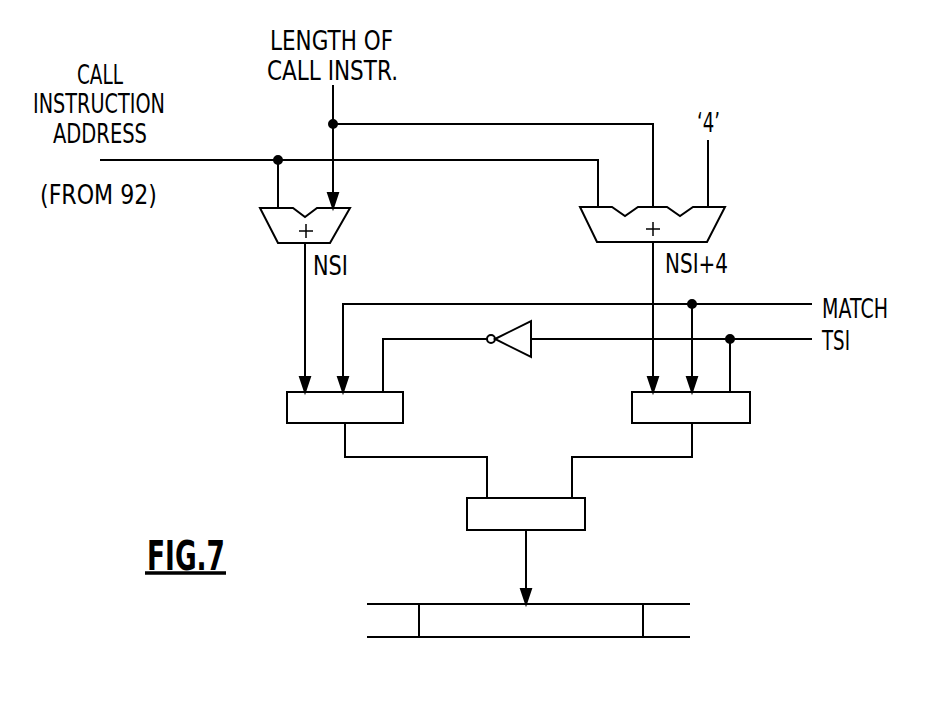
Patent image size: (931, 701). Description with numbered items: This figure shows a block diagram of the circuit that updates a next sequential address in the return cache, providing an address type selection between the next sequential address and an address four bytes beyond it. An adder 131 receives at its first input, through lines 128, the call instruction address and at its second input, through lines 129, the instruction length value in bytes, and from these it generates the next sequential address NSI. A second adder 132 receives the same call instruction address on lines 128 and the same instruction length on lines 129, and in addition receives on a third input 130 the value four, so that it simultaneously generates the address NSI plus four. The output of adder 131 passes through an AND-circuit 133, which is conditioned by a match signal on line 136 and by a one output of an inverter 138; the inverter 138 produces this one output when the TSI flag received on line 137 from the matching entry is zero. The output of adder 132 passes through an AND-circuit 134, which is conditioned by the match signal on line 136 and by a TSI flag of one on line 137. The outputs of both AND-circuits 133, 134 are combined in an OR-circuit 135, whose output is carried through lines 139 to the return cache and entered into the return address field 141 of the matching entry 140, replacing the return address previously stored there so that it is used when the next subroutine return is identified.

The lines 128 is at (228, 160).
The lines 129 is at (332, 113).
The third input 130 is at (708, 182).
The adder 131 is at (350, 220).
The adder 132 is at (716, 222).
The AND-circuit 133 is at (287, 400).
The AND-circuit 134 is at (733, 423).
The OR-circuit 135 is at (467, 512).
The line 136 is at (762, 303).
The line 137 is at (773, 340).
The inverter 138 is at (514, 352).
The lines 139 is at (528, 566).
The matching entry 140 is at (677, 637).
The return address field 141 is at (580, 637).